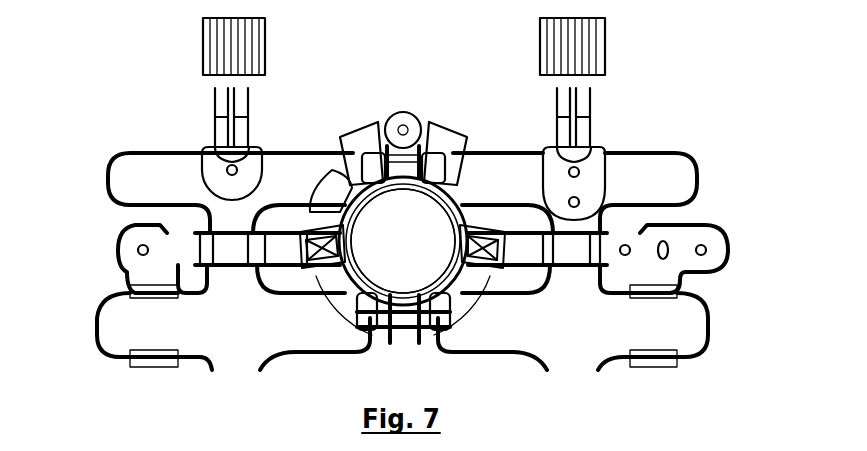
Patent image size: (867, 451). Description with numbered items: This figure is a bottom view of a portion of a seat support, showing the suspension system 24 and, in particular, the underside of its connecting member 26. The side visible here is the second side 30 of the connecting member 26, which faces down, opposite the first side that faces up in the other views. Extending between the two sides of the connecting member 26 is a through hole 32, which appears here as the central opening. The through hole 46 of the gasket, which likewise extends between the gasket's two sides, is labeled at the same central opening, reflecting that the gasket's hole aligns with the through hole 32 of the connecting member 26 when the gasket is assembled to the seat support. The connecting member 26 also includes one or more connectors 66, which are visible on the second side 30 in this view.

The suspension system 24 is at (140, 120).
The connecting member 26 is at (484, 136).
The second side 30 is at (326, 192).
The through hole 32 is at (419, 236).
The through hole 46 is at (419, 272).
The connectors 66 is at (318, 272).